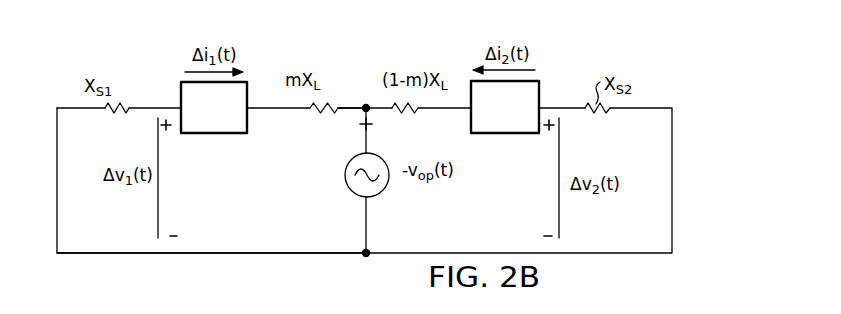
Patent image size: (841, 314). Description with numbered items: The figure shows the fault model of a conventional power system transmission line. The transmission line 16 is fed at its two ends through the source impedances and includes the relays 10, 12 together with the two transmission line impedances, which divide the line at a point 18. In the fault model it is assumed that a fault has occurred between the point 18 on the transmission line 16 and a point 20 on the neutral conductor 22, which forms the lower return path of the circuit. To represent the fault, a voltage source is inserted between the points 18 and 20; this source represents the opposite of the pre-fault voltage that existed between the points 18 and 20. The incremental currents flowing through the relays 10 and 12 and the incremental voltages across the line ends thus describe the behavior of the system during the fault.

The relay 10 is at (181, 89).
The relay 12 is at (471, 89).
The transmission line 16 is at (353, 107).
The point 18 is at (366, 106).
The point 20 is at (367, 256).
The neutral conductor 22 is at (277, 253).